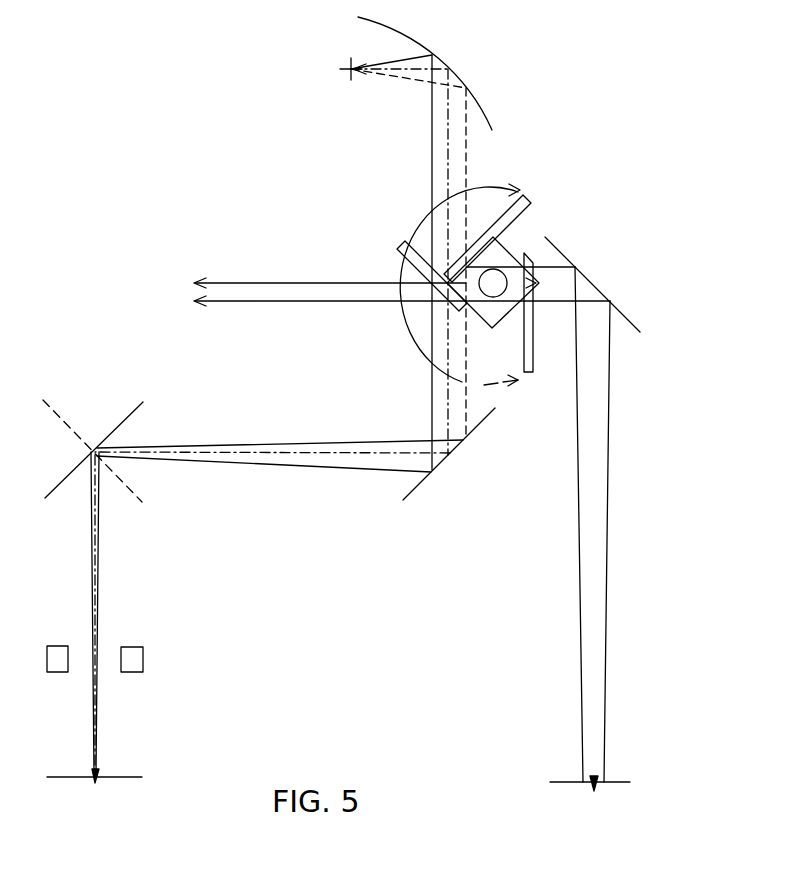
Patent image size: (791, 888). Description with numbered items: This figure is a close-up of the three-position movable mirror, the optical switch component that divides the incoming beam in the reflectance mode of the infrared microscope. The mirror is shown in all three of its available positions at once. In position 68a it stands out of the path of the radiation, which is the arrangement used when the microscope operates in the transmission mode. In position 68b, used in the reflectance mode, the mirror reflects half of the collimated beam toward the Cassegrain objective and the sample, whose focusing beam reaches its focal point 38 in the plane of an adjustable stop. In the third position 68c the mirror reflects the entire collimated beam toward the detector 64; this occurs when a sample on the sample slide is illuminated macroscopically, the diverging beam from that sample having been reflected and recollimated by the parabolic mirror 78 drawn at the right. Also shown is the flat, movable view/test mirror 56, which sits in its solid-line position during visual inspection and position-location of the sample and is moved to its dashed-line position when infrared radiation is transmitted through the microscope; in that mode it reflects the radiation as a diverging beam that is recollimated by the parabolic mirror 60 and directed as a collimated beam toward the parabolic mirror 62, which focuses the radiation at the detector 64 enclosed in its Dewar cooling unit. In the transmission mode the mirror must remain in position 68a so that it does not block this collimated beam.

The focal point 38 is at (98, 657).
The view/test mirror 56 is at (113, 432).
The parabolic mirror 60 is at (415, 490).
The parabolic mirror 62 is at (462, 82).
The detector 64 is at (351, 76).
The mirror position 68a is at (533, 345).
The mirror position 68b is at (523, 212).
The mirror position 68c is at (413, 268).
The parabolic mirror 78 is at (627, 318).